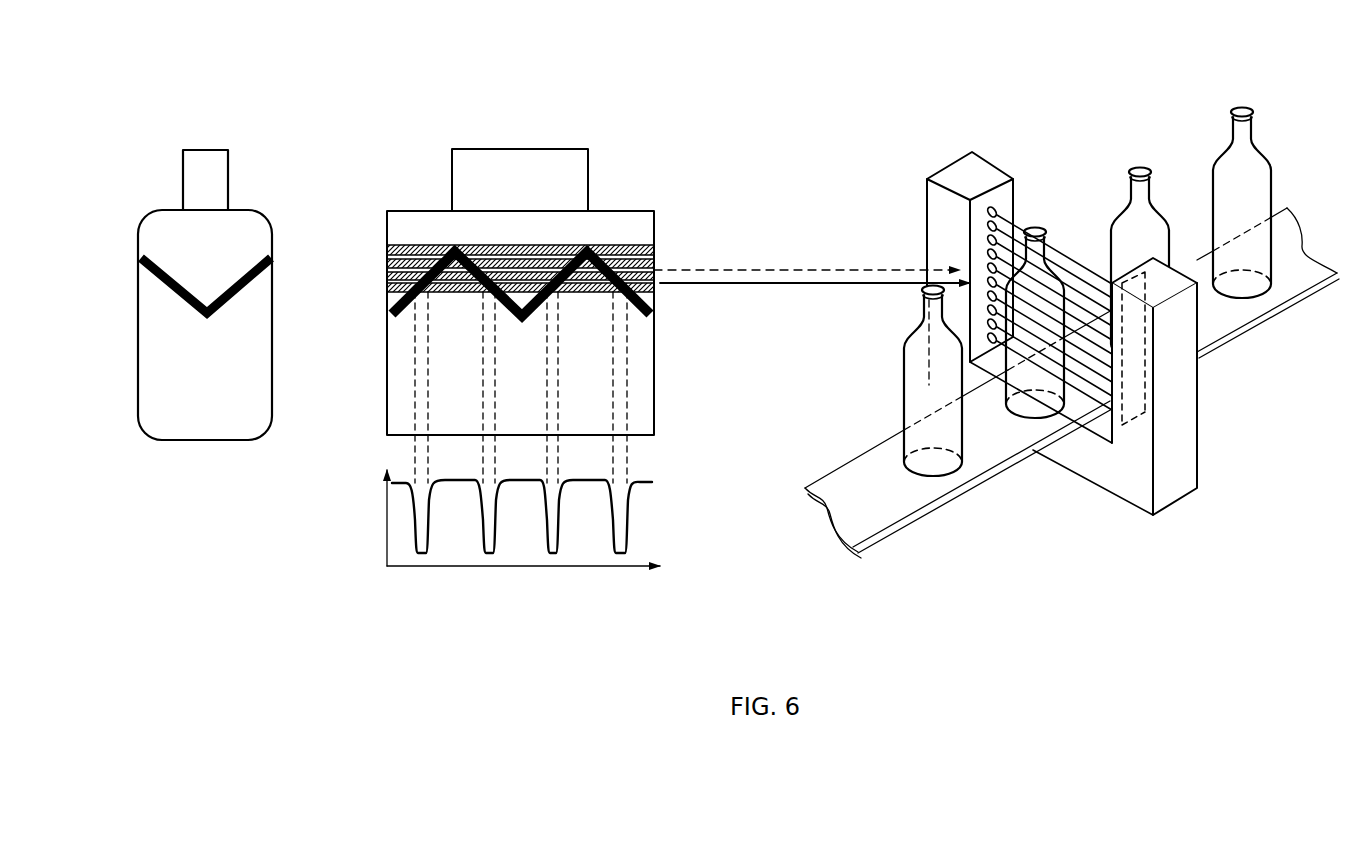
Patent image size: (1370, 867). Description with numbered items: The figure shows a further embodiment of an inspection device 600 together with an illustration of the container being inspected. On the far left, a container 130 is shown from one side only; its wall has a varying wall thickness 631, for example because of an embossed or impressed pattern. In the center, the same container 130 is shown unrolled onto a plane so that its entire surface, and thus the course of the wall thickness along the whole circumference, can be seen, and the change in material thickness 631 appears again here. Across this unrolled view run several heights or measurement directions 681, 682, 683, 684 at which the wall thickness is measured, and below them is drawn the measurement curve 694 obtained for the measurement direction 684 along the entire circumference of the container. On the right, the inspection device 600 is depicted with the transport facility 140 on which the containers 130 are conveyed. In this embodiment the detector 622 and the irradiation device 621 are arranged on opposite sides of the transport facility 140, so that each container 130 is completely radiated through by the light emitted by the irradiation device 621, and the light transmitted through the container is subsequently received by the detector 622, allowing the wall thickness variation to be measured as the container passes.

The inspection device 600 is at (1153, 88).
The container 130 is at (165, 216).
The varying wall thickness 631 is at (180, 298).
The measurement direction 681 is at (387, 244).
The measurement direction 682 is at (387, 262).
The measurement direction 683 is at (387, 274).
The measurement direction 684 is at (387, 288).
The measurement curve 694 is at (387, 508).
The detector 622 is at (991, 172).
The irradiation device 621 is at (1138, 408).
The transport facility 140 is at (1313, 282).